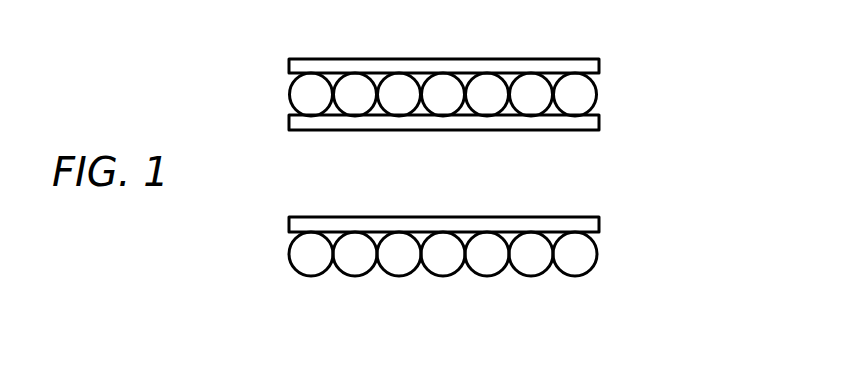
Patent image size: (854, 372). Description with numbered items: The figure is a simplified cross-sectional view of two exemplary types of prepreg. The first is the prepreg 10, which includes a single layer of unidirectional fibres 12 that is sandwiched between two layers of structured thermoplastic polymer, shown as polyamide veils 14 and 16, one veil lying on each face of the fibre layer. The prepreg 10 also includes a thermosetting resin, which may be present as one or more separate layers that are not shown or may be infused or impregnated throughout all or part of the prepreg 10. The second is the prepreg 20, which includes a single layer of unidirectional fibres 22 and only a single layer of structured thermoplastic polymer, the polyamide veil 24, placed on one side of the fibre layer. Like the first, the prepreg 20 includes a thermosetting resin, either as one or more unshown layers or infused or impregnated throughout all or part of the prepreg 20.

The prepreg 10 is at (473, 90).
The unidirectional fibres 12 is at (300, 94).
The polyamide veil 14 is at (564, 67).
The polyamide veil 16 is at (564, 122).
The prepreg 20 is at (493, 256).
The unidirectional fibres 22 is at (304, 262).
The polyamide veil 24 is at (323, 224).